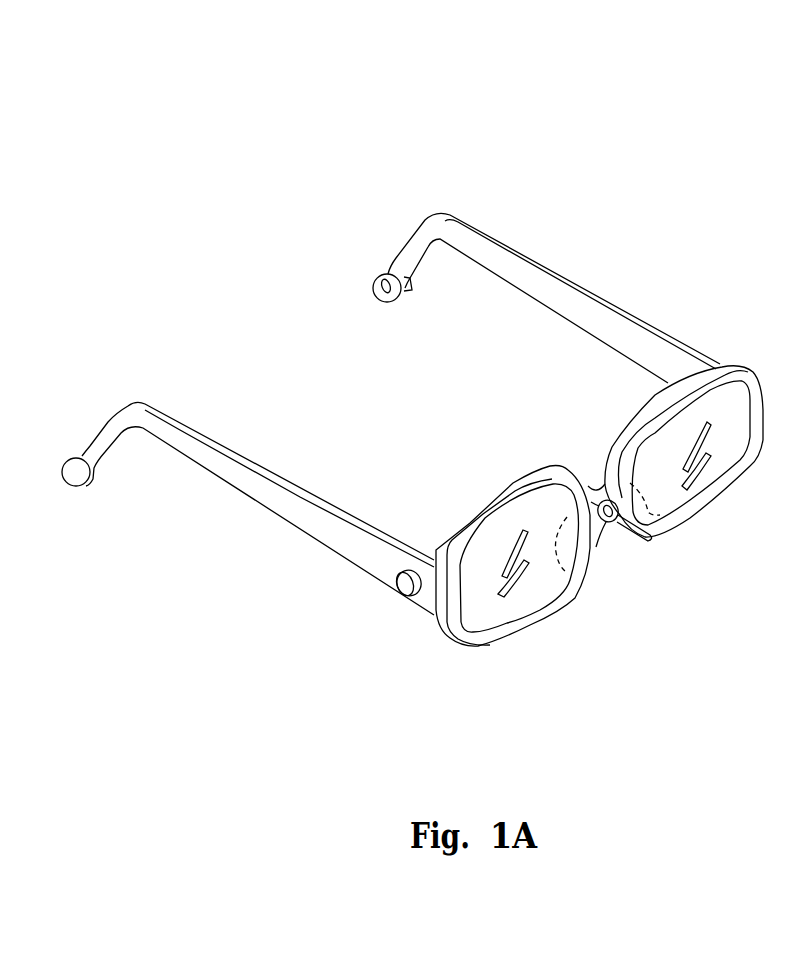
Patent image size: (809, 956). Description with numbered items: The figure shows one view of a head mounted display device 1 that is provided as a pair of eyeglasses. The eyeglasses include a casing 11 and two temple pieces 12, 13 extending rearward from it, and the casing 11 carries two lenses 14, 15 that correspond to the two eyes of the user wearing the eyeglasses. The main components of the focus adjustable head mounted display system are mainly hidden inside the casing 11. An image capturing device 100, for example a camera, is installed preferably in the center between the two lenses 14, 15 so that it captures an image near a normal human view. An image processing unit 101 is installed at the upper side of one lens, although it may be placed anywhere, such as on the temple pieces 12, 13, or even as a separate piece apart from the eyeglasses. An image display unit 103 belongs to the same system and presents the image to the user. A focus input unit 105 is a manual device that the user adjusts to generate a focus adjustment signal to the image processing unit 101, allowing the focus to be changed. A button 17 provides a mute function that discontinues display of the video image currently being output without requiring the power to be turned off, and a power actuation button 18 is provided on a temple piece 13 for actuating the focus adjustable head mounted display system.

The head mounted display device 1 is at (421, 380).
The casing 11 is at (517, 485).
The temple piece 12 is at (546, 298).
The temple piece 13 is at (317, 522).
The lens 14 is at (544, 568).
The lens 15 is at (705, 490).
The button 17 is at (410, 287).
The power actuation button 18 is at (407, 583).
The image capturing device 100 is at (622, 515).
The image processing unit 101 is at (563, 557).
The image display unit 103 is at (655, 653).
The focus input unit 105 is at (645, 512).